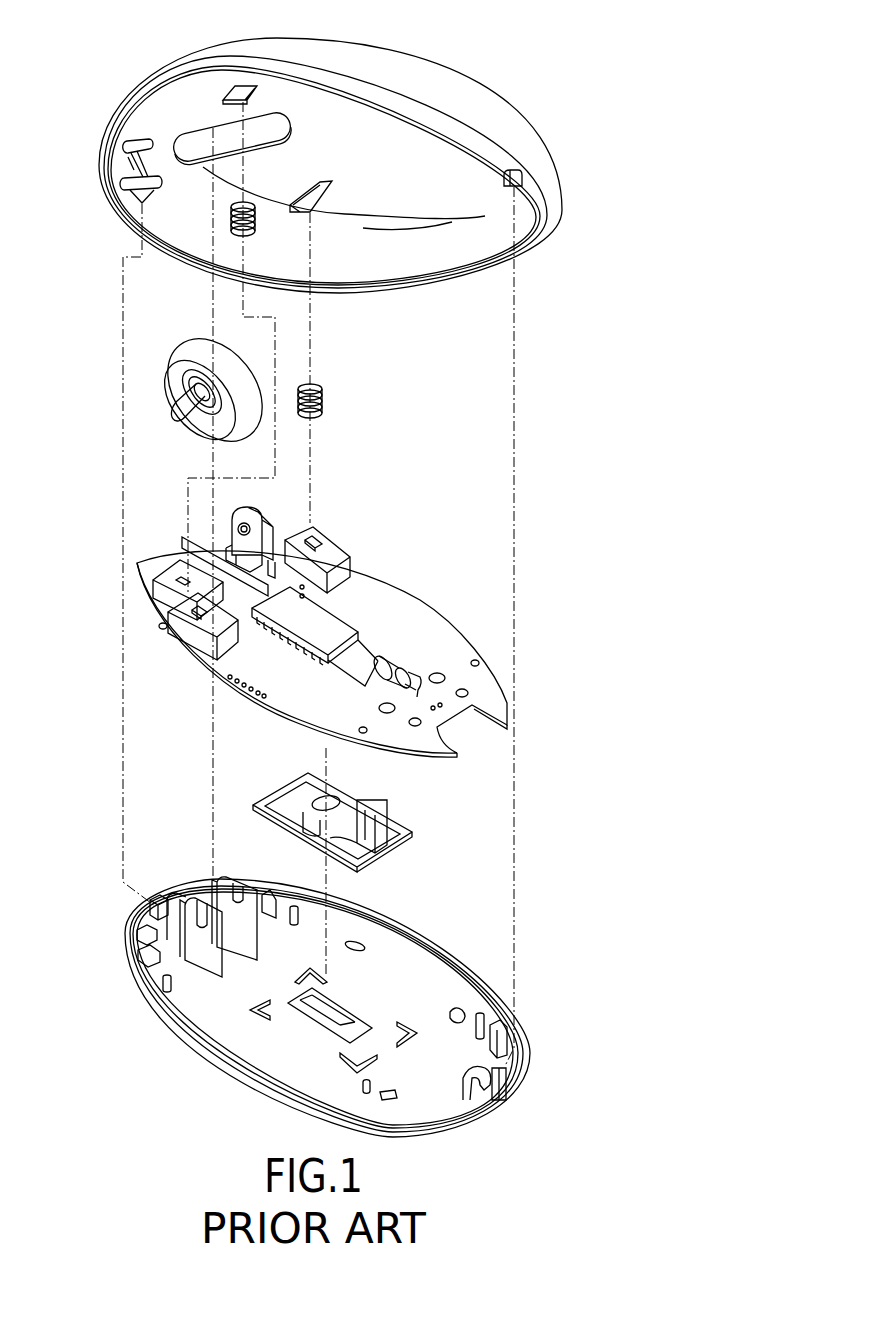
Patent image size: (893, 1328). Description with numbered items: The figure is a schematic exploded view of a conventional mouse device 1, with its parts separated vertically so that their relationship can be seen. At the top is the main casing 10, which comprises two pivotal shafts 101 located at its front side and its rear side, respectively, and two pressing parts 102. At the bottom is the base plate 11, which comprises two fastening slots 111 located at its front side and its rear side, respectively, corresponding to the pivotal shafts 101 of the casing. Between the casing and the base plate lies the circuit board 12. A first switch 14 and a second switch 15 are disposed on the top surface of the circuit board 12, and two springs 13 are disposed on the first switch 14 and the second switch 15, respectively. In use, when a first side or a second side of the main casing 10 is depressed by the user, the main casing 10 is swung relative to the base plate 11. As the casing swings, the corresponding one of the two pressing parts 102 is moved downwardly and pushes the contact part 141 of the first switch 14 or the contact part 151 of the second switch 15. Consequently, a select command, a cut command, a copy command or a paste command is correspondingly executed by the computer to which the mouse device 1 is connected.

The mouse device 1 is at (565, 16).
The main casing 10 is at (430, 86).
The pivotal shafts 101 is at (128, 160).
The pressing parts 102 is at (235, 90).
The base plate 11 is at (437, 928).
The fastening slots 111 is at (151, 903).
The circuit board 12 is at (430, 607).
The springs 13 is at (248, 207).
The first switch 14 is at (228, 620).
The contact part 141 is at (163, 628).
The second switch 15 is at (333, 556).
The contact part 151 is at (313, 540).